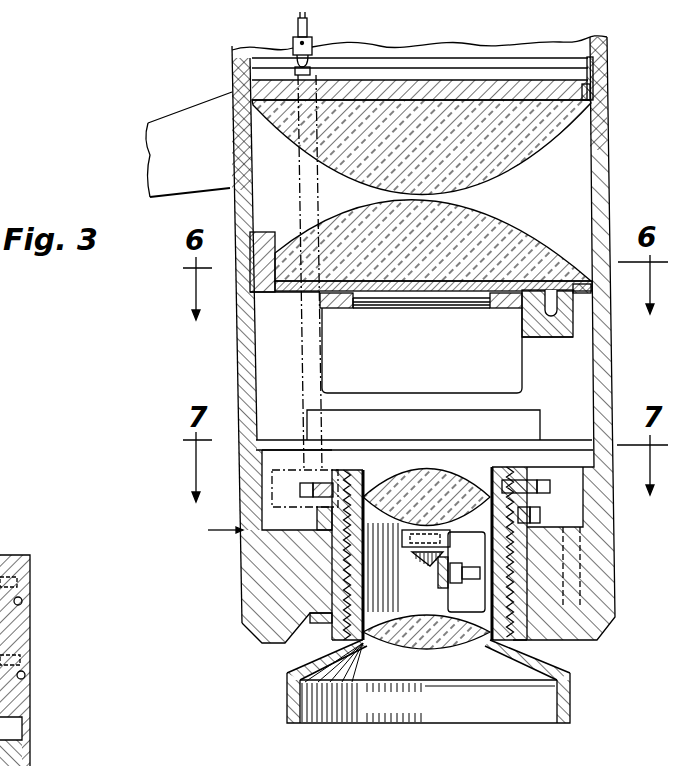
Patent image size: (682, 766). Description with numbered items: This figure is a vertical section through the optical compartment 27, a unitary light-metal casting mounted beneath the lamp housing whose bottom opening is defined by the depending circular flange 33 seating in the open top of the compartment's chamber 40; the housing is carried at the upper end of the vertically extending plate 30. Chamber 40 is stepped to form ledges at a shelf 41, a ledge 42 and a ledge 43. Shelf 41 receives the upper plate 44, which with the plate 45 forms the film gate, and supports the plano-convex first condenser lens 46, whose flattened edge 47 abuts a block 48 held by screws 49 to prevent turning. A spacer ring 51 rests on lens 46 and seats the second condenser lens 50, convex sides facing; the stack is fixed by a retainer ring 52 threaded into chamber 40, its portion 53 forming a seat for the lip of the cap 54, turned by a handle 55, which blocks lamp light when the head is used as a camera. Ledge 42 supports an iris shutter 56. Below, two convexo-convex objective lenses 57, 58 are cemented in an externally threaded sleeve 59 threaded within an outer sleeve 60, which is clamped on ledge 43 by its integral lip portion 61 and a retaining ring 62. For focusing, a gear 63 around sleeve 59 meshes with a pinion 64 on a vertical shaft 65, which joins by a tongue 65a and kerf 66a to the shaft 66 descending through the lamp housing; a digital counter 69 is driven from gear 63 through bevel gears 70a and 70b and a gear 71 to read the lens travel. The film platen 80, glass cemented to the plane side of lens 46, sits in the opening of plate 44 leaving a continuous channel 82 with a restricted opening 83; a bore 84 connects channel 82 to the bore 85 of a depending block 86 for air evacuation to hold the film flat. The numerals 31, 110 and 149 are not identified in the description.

The optical compartment 27 is at (215, 526).
The vertically extending plate 30 is at (31, 693).
The mounting holes 31 is at (26, 671).
The depending circular shaped flange 33 is at (566, 60).
The chamber 40 is at (427, 340).
The shelf 41 is at (240, 318).
The ledge 42 is at (258, 457).
The ledge 43 is at (272, 530).
The upper plate 44 is at (581, 317).
The plate 45 is at (508, 310).
The first condenser lens 46 is at (537, 226).
The flattened edge 47 is at (286, 248).
The block 48 is at (240, 293).
The screws 49 is at (237, 280).
The second condenser lens 50 is at (528, 160).
The spacer ring 51 is at (609, 170).
The retainer ring 52 is at (594, 98).
The seat portion 53 is at (596, 78).
The cap 54 is at (483, 78).
The handle 55 is at (425, 66).
The iris shutter 56 is at (537, 411).
The objective lens 57 is at (462, 480).
The objective lens 58 is at (426, 648).
The externally threaded sleeve 59 is at (364, 593).
The outer sleeve 60 is at (333, 558).
The integral lip portion 61 is at (310, 642).
The retaining ring 62 is at (537, 510).
The gear 63 is at (535, 480).
The pinion 64 is at (272, 490).
The vertical shaft 65 is at (299, 176).
The tongue 65a is at (314, 58).
The shaft 66 is at (297, 32).
The kerf 66a is at (292, 56).
The digital counter 69 is at (481, 627).
The bevel gear 70a is at (440, 588).
The bevel gear 70b is at (420, 563).
The gear 71 is at (422, 472).
The film platen 80 is at (420, 308).
The channel 82 is at (328, 309).
The restricted opening 83 is at (357, 308).
The bore 84 is at (596, 285).
The bore 85 is at (557, 330).
The depending block 86 is at (553, 338).
The light chamber 110 is at (422, 350).
The bracket plate 149 is at (148, 126).